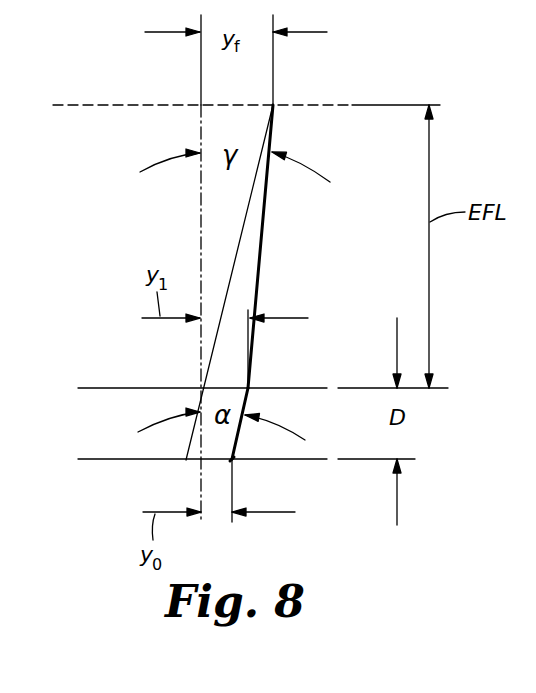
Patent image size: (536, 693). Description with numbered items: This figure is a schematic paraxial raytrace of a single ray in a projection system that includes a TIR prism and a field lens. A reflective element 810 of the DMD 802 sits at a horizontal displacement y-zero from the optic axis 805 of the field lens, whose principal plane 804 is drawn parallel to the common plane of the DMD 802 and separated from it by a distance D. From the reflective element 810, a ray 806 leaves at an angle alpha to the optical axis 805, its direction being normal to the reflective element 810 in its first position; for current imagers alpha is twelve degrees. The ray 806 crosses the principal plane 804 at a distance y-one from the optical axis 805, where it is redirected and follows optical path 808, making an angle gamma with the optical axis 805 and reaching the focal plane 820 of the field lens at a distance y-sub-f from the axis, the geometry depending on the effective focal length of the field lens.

The DMD 802 is at (96, 461).
The principal plane 804 is at (103, 387).
The optic axis 805 is at (200, 225).
The ray 806 is at (248, 399).
The optical path 808 is at (262, 242).
The reflective element 810 is at (232, 462).
The focal plane 820 is at (91, 104).